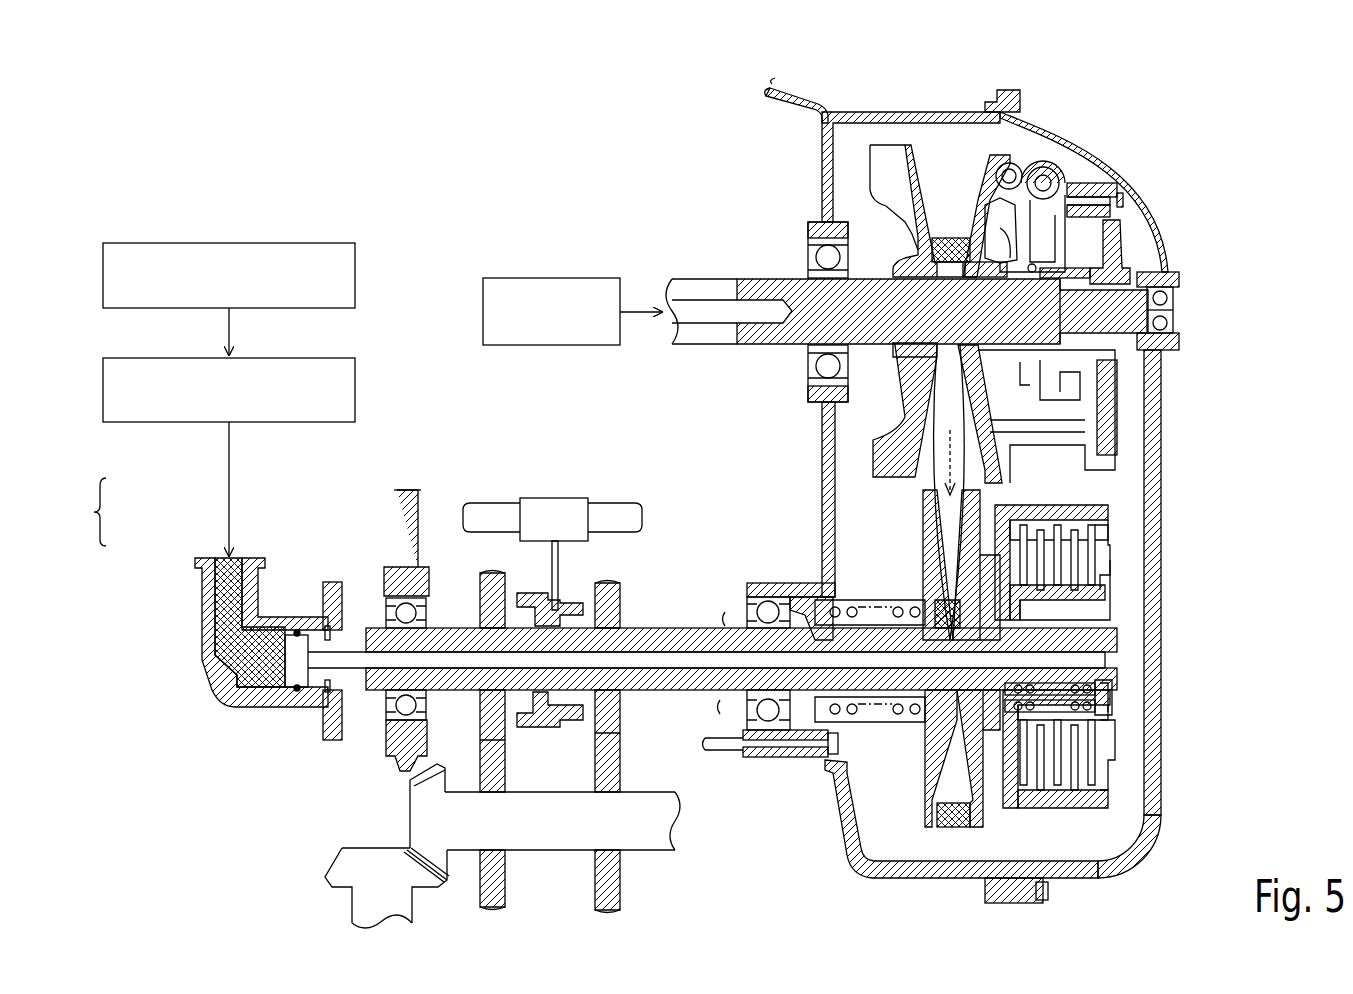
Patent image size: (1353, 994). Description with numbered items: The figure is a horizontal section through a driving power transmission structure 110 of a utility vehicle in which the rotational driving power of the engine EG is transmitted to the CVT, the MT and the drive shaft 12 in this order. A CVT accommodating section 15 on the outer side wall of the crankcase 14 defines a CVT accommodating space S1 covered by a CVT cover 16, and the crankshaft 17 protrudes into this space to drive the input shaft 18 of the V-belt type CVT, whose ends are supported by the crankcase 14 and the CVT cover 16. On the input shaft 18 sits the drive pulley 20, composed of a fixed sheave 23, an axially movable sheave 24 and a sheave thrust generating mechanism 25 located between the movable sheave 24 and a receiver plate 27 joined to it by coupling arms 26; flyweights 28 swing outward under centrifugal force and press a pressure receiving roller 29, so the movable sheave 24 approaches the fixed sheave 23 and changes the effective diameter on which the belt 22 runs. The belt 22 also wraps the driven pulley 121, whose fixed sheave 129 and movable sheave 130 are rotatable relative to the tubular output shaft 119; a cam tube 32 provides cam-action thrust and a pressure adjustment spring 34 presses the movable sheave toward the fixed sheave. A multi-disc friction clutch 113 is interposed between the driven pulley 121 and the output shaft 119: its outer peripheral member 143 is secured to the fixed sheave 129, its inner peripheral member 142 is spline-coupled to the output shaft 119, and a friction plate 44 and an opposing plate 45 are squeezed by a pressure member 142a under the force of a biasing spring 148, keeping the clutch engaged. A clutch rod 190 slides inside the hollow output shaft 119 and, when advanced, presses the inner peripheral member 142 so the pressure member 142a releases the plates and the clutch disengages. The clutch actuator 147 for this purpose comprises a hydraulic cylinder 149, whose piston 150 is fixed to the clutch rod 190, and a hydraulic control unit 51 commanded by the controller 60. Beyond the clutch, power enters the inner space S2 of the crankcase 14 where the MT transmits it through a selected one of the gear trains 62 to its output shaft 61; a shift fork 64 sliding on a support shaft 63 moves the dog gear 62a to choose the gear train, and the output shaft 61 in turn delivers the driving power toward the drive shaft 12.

The drive shaft 12 is at (345, 900).
The crankcase 14 is at (800, 90).
The CVT accommodating section 15 is at (870, 115).
The CVT cover 16 is at (1180, 388).
The crankshaft 17 is at (706, 293).
The input shaft 18 is at (1074, 306).
The drive pulley 20 is at (988, 148).
The belt 22 is at (930, 468).
The fixed sheave 23 is at (916, 150).
The movable sheave 24 is at (968, 175).
The sheave thrust generating mechanism 25 is at (1075, 190).
The coupling arms 26 is at (1090, 178).
The receiver plate 27 is at (1092, 416).
The flyweights 28 is at (1027, 235).
The pressure receiving roller 29 is at (1052, 163).
The cam tube 32 is at (846, 625).
The pressure adjustment spring 34 is at (873, 727).
The friction plate 44 is at (1100, 772).
The opposing plate 45 is at (1085, 782).
The hydraulic control unit 51 is at (137, 422).
The controller 60 is at (300, 243).
The output shaft 61 is at (548, 852).
The gear trains 62 is at (625, 715).
The dog gear 62a is at (560, 727).
The support shaft 63 is at (610, 497).
The shift fork 64 is at (566, 565).
The driving power transmission structure 110 is at (455, 240).
The clutch 113 is at (1130, 792).
The output shaft 119 is at (672, 625).
The driven pulley 121 is at (920, 813).
The fixed sheave 129 is at (988, 505).
The movable sheave 130 is at (917, 540).
The inner peripheral member 142 is at (1092, 590).
The pressure member 142a is at (1108, 542).
The outer peripheral member 143 is at (1100, 508).
The clutch actuator 147 is at (81, 512).
The biasing spring 148 is at (1100, 718).
The hydraulic cylinder 149 is at (200, 562).
The piston 150 is at (258, 655).
The clutch rod 190 is at (1097, 665).
The engine EG is at (542, 278).
The manual transmission MT is at (707, 833).
The continuously variable transmission CVT is at (1128, 418).
The CVT accommodating space S1 is at (836, 512).
The inner space S2 is at (769, 537).